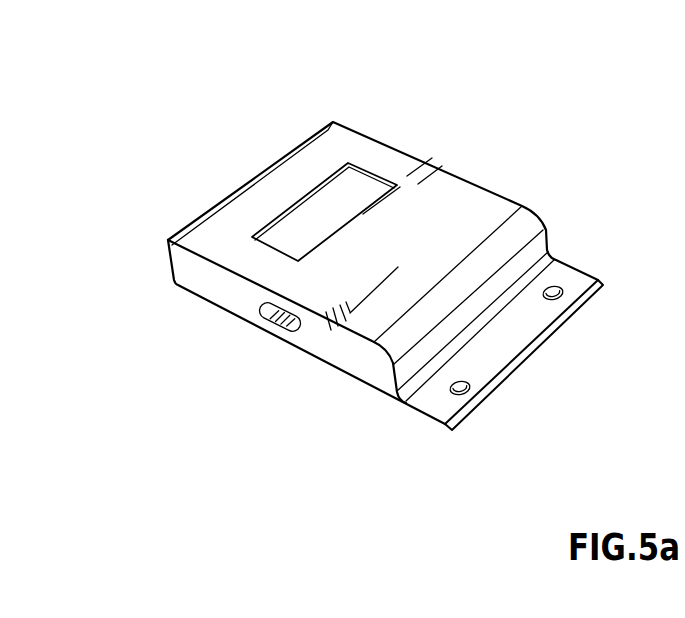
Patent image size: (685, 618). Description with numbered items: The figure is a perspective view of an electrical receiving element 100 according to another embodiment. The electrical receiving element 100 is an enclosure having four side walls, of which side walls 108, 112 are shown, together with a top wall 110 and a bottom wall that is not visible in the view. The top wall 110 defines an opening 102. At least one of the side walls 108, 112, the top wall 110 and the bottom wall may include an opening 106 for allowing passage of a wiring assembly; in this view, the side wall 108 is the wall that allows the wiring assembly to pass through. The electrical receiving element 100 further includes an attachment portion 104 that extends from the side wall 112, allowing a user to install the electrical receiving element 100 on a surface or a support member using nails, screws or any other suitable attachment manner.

The electrical receiving element 100 is at (392, 266).
The opening 102 is at (305, 217).
The attachment portion 104 is at (573, 237).
The opening 106 is at (241, 338).
The side wall 108 is at (232, 300).
The top wall 110 is at (322, 153).
The side wall 112 is at (430, 348).